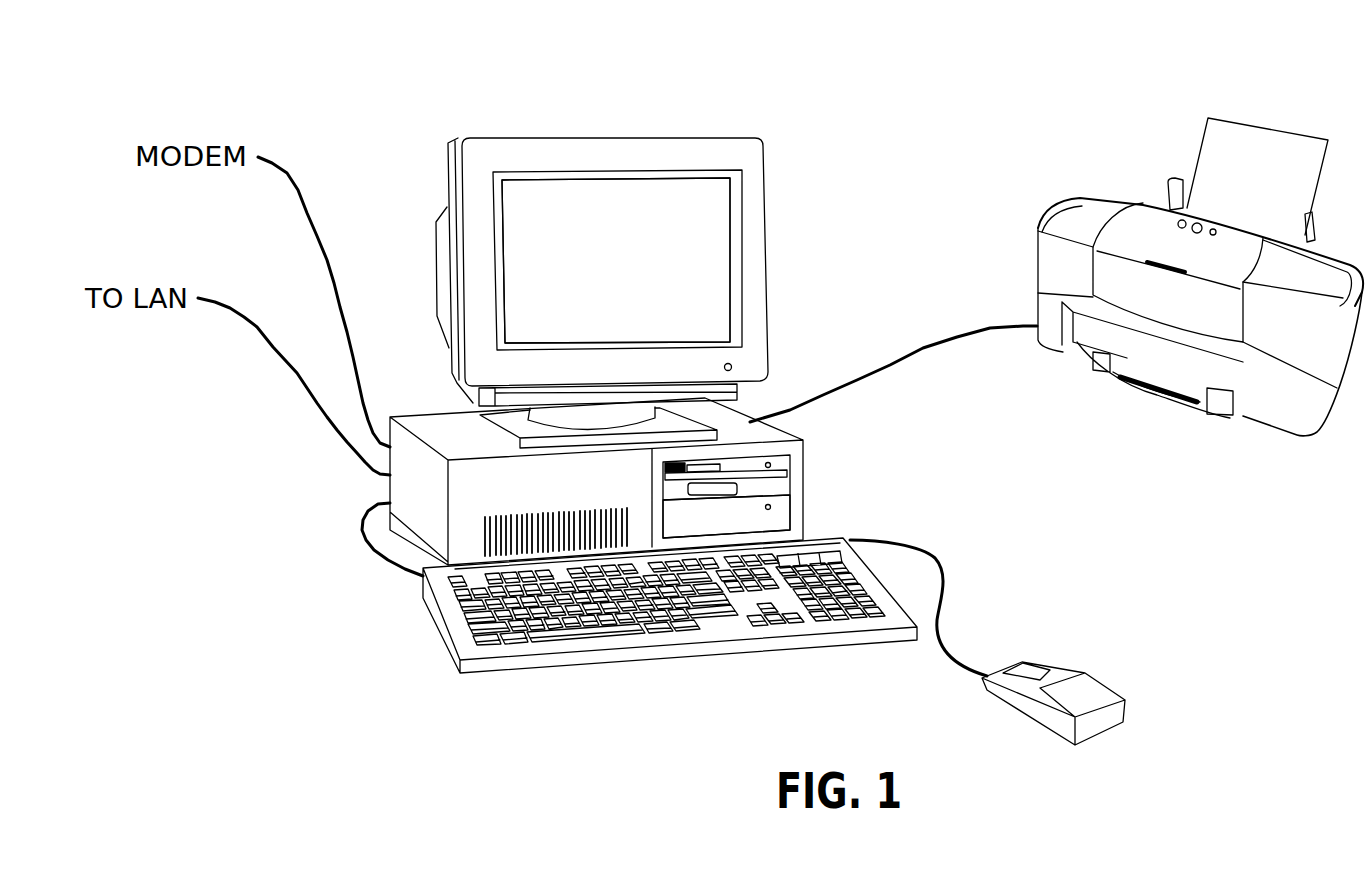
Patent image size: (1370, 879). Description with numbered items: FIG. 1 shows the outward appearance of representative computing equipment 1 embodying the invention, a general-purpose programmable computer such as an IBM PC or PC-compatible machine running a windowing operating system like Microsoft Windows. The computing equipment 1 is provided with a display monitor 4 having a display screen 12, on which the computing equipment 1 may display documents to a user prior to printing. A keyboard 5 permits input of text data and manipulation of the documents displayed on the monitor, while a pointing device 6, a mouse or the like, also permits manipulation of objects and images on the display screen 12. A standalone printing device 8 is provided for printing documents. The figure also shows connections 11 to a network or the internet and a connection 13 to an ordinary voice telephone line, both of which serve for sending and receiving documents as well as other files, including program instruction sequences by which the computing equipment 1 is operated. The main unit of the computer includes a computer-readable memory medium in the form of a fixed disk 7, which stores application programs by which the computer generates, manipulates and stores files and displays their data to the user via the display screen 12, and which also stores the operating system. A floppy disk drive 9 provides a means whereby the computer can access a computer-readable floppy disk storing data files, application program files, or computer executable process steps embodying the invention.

The computing equipment 1 is at (699, 296).
The display monitor 4 is at (633, 267).
The keyboard 5 is at (537, 643).
The pointing device 6 is at (1098, 738).
The fixed disk 7 is at (757, 512).
The standalone printing device 8 is at (1091, 184).
The floppy disk drive 9 is at (775, 488).
The connections to a network or the internet 11 is at (260, 328).
The display screen 12 is at (713, 272).
The connection to an ordinary voice telephone line 13 is at (320, 246).